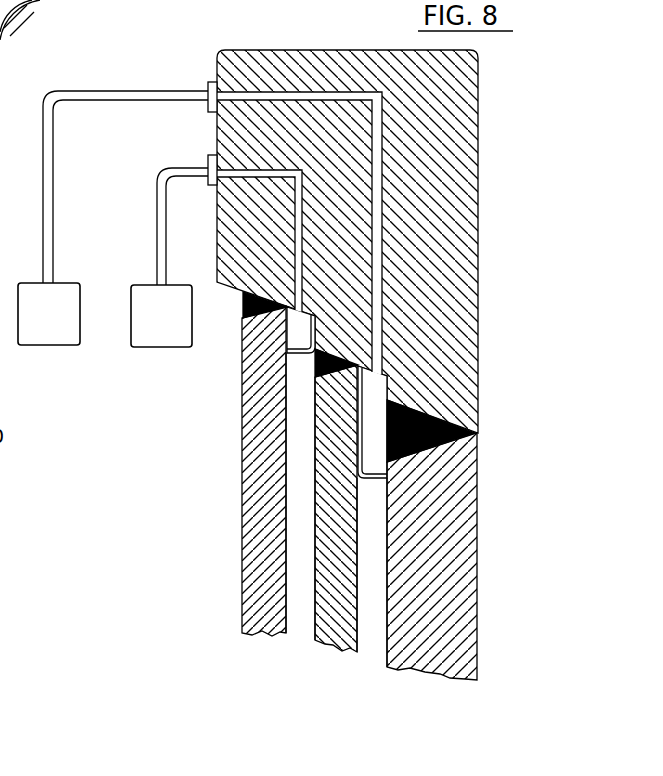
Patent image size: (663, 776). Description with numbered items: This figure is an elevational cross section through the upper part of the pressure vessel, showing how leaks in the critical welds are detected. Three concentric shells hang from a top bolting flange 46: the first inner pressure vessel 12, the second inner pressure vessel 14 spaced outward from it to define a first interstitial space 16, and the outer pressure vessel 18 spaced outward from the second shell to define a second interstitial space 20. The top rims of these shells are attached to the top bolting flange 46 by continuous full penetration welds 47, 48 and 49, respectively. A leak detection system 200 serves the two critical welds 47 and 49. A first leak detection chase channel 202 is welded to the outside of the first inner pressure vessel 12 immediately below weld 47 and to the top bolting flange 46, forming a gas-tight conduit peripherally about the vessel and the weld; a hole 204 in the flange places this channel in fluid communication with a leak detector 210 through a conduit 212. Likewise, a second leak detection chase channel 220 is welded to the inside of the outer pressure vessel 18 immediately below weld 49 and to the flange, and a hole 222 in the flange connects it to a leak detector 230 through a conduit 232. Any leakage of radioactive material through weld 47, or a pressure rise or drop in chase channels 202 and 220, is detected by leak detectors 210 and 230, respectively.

The first inner pressure vessel 12 is at (445, 680).
The second inner pressure vessel 14 is at (336, 650).
The first interstitial space 16 is at (372, 644).
The outer pressure vessel 18 is at (256, 636).
The second interstitial space 20 is at (298, 624).
The top bolting flange 46 is at (477, 74).
The weld 47 is at (471, 431).
The weld 48 is at (321, 358).
The weld 49 is at (243, 305).
The leak detection system 200 is at (117, 224).
The first leak detection chase channel 202 is at (376, 480).
The hole 204 is at (383, 179).
The leak detector 210 is at (64, 324).
The conduit 212 is at (117, 90).
The second leak detection chase channel 220 is at (299, 352).
The hole 222 is at (263, 168).
The leak detector 230 is at (161, 316).
The conduit 232 is at (157, 207).